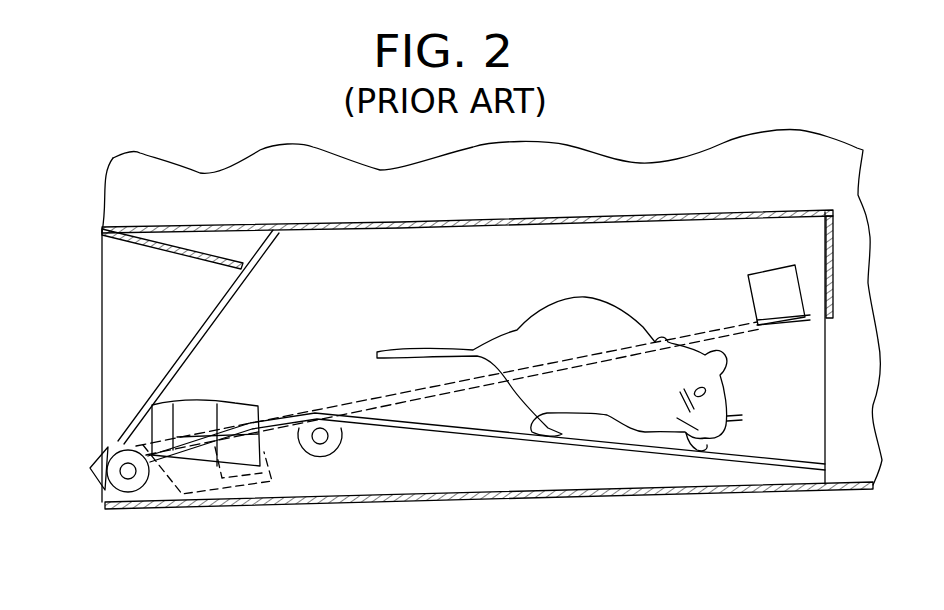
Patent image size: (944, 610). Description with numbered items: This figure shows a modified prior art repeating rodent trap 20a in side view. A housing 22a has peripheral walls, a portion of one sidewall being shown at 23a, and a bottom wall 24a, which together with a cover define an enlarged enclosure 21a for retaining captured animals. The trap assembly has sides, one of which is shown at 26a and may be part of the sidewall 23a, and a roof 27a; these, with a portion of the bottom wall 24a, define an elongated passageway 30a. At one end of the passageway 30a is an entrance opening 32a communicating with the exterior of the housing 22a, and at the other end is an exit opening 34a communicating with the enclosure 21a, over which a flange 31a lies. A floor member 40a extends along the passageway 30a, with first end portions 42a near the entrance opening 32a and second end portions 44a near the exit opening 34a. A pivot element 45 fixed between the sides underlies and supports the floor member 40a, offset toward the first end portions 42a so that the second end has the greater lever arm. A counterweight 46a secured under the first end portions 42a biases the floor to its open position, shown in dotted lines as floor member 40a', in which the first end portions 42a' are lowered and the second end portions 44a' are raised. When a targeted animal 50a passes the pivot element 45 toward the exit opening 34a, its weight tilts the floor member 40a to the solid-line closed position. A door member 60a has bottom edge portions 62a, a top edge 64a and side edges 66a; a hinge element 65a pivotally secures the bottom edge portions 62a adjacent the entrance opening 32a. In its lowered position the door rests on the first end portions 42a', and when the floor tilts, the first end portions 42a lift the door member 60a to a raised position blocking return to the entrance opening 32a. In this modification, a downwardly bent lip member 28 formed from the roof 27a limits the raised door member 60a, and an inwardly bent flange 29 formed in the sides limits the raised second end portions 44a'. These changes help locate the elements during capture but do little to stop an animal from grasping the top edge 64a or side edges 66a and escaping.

The rodent trap housing 20a is at (492, 287).
The enclosure 21a is at (852, 232).
The housing 22a is at (642, 162).
The sidewall 23a is at (807, 150).
The bottom wall 24a is at (783, 492).
The side 26a is at (370, 242).
The roof 27a is at (728, 210).
The lip member 28 is at (162, 250).
The flange 29 is at (778, 315).
The passageway 30a is at (400, 325).
The flange 31a is at (836, 288).
The entrance opening 32a is at (140, 340).
The exit opening 34a is at (856, 420).
The floor member 40a is at (486, 447).
The floor member 40a' is at (448, 356).
The first end portions 42a is at (206, 400).
The first end portions 42a' is at (207, 511).
The second end portions 44a is at (735, 507).
The second end portions 44a' is at (783, 359).
The pivot element 45 is at (323, 444).
The counterweight 46a is at (200, 421).
The targeted animal 50a is at (591, 396).
The door member 60a is at (177, 357).
The bottom edge portions 62a is at (97, 470).
The top edge 64a is at (264, 230).
The hinge element 65a is at (128, 480).
The side edge 66a is at (232, 306).